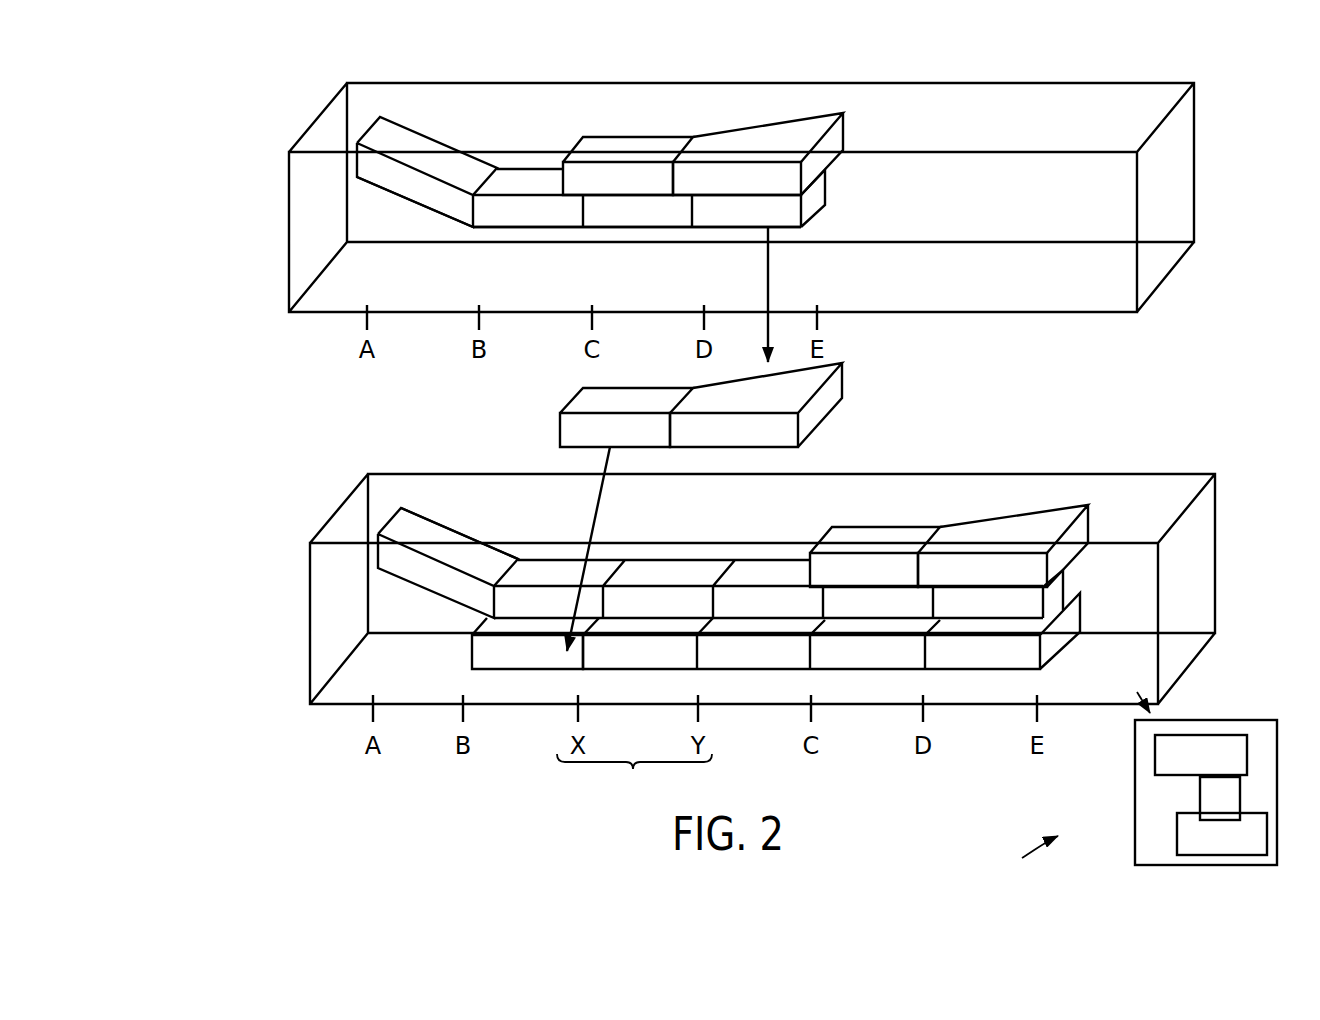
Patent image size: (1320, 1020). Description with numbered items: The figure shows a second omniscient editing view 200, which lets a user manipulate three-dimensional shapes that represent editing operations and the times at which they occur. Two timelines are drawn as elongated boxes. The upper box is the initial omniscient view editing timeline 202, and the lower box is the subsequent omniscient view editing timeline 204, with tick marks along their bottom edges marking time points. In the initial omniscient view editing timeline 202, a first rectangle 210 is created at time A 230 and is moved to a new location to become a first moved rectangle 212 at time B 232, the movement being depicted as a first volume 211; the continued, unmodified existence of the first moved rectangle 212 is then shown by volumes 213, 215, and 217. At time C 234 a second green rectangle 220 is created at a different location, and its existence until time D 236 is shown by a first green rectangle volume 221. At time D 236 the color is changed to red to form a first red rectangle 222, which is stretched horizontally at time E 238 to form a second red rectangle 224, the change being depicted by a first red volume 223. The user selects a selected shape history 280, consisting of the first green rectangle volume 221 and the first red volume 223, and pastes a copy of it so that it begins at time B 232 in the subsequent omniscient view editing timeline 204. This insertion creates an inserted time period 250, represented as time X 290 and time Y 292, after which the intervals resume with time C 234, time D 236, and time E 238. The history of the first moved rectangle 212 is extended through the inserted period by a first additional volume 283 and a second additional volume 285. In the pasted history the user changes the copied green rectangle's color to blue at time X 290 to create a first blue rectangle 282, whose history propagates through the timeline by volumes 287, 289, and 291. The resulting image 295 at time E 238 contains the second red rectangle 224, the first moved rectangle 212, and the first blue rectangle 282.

The second omniscient editing view 200 is at (663, 197).
The initial omniscient view editing timeline 202 is at (257, 231).
The subsequent omniscient view editing timeline 204 is at (280, 625).
The first rectangle 210 is at (385, 150).
The first volume 211 is at (374, 180).
The first moved rectangle 212 is at (492, 169).
The volume 213 is at (492, 229).
The volume 215 is at (686, 228).
The volume 217 is at (780, 229).
The second green rectangle 220 is at (573, 150).
The first green rectangle volume 221 is at (626, 147).
The first red rectangle 222 is at (692, 142).
The first red volume 223 is at (740, 150).
The second red rectangle 224 is at (846, 130).
The time A 230 is at (367, 305).
The time B 232 is at (479, 305).
The time C 234 is at (592, 305).
The time D 236 is at (704, 305).
The time E 238 is at (817, 305).
The inserted time period 250 is at (634, 777).
The selected shape history 280 is at (884, 402).
The first blue rectangle 282 is at (586, 668).
The first additional volume 283 is at (675, 570).
The second additional volume 285 is at (773, 568).
The volume 287 is at (758, 669).
The volume 289 is at (887, 669).
The volume 291 is at (982, 669).
The time X 290 is at (578, 697).
The time Y 292 is at (698, 697).
The resulting image 295 is at (1135, 745).